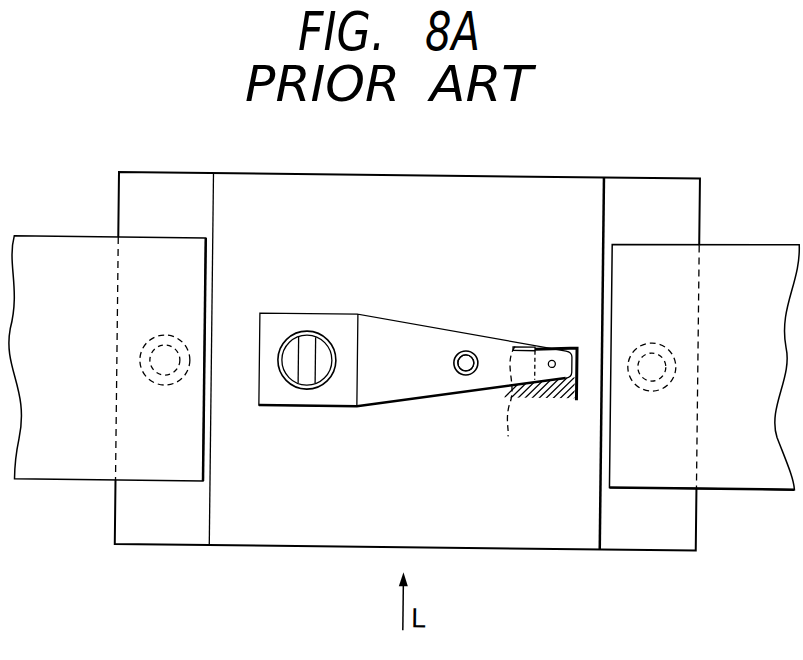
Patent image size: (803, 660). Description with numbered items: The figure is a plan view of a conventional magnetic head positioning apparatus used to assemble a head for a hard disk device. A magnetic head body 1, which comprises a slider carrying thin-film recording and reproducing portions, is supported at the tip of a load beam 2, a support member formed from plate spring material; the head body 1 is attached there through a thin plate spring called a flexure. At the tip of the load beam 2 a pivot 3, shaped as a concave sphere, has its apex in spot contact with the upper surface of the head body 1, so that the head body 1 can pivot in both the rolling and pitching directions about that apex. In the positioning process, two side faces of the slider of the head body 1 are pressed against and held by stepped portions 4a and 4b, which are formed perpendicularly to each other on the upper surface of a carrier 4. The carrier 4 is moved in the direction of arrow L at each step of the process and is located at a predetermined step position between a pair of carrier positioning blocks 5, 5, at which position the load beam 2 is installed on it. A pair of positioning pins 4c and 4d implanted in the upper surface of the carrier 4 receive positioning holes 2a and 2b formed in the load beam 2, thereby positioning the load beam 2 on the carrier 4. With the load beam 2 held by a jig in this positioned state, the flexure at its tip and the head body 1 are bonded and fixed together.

The magnetic head body 1 is at (578, 342).
The load beam 2 is at (401, 399).
The positioning hole 2a is at (320, 330).
The positioning hole 2b is at (470, 347).
The pivot 3 is at (554, 355).
The carrier 4 is at (333, 545).
The stepped portion 4a is at (566, 392).
The stepped portion 4b is at (507, 403).
The positioning pin 4c is at (297, 369).
The positioning pin 4d is at (468, 371).
The carrier positioning block 5 is at (80, 482).